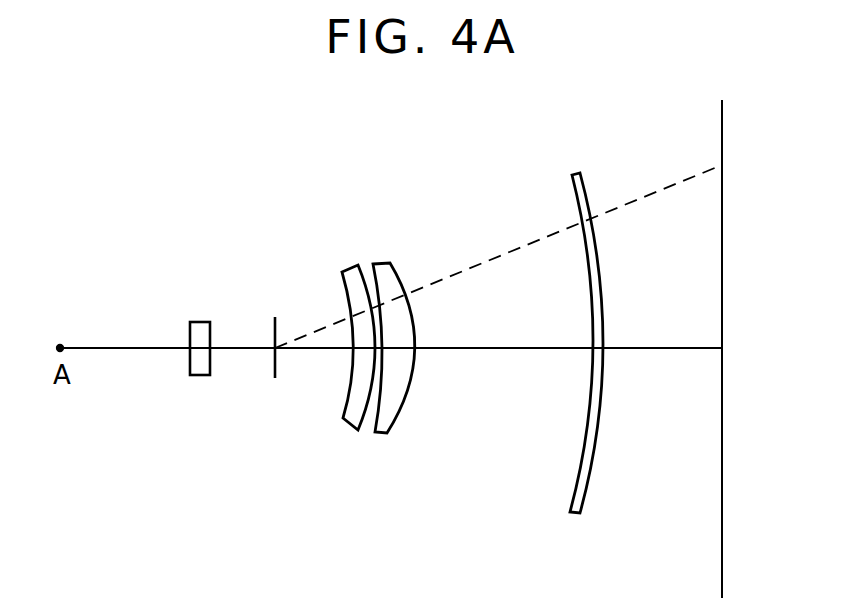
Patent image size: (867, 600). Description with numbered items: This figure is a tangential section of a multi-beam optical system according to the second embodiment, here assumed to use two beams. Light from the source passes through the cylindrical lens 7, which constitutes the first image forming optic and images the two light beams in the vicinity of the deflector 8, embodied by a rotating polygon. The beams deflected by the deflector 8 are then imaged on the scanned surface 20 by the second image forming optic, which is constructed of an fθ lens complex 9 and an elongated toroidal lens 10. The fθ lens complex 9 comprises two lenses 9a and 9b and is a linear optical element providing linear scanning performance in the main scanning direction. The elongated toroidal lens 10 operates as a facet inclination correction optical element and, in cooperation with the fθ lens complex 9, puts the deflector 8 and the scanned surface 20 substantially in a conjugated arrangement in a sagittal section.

The cylindrical lens 7 is at (202, 328).
The deflector 8 is at (275, 322).
The fθ lens complex 9 is at (297, 231).
The lens 9a is at (346, 328).
The lens 9b is at (394, 330).
The elongated toroidal lens 10 is at (576, 183).
The scanned surface 20 is at (722, 333).